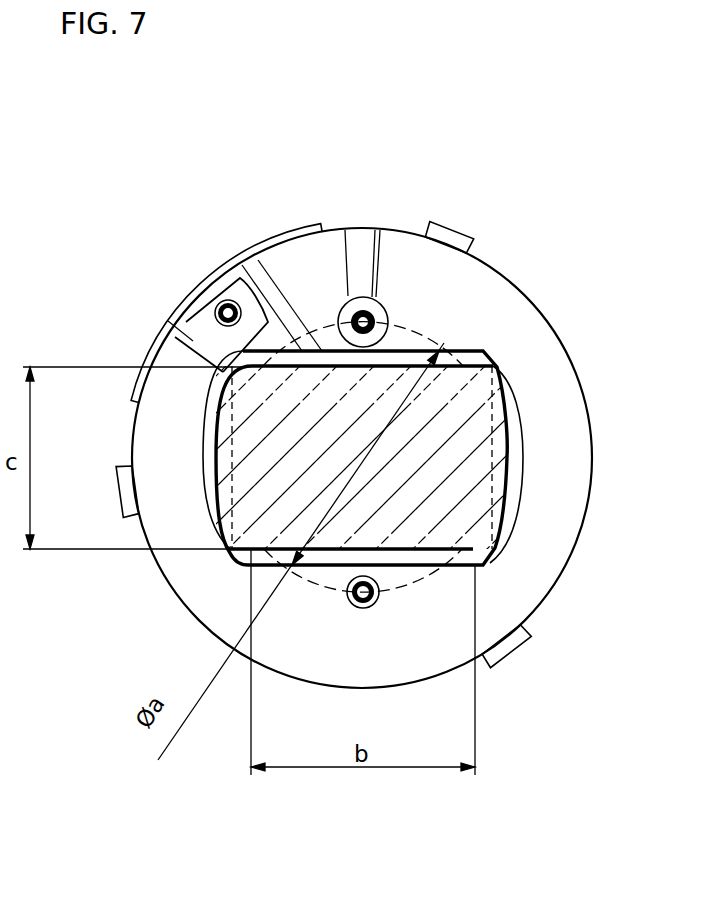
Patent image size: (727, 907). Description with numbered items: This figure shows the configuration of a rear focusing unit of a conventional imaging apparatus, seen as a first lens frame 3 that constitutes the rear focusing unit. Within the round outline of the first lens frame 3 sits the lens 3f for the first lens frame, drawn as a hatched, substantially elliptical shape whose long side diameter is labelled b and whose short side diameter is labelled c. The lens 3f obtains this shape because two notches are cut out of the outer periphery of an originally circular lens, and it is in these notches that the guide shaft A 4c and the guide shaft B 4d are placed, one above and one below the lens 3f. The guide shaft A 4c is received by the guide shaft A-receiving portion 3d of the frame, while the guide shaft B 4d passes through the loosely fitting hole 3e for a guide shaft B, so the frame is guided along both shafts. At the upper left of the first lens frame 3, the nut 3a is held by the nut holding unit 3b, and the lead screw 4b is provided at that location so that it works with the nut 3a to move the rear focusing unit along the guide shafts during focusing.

The first lens frame 3 is at (533, 331).
The nut 3a is at (197, 317).
The nut holding unit 3b is at (236, 262).
The guide shaft A-receiving portion 3d is at (390, 304).
The loosely fitting hole for a guide shaft B 3e is at (374, 582).
The lens for the first lens frame 3f is at (505, 437).
The lead screw 4b is at (220, 307).
The guide shaft A 4c is at (363, 316).
The guide shaft B 4d is at (374, 594).